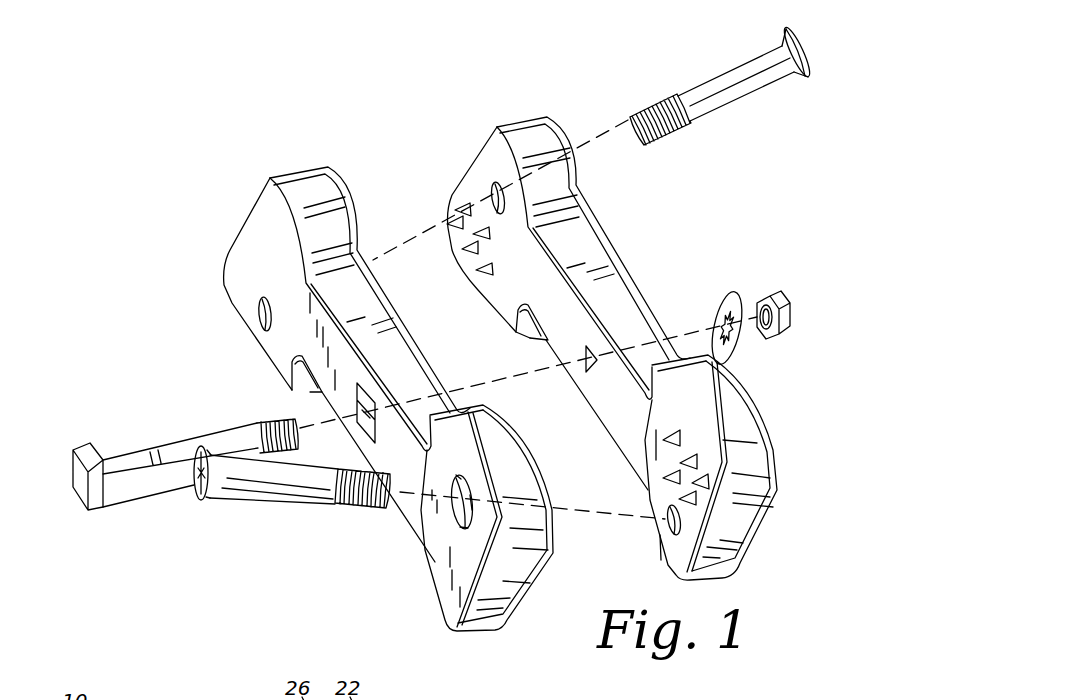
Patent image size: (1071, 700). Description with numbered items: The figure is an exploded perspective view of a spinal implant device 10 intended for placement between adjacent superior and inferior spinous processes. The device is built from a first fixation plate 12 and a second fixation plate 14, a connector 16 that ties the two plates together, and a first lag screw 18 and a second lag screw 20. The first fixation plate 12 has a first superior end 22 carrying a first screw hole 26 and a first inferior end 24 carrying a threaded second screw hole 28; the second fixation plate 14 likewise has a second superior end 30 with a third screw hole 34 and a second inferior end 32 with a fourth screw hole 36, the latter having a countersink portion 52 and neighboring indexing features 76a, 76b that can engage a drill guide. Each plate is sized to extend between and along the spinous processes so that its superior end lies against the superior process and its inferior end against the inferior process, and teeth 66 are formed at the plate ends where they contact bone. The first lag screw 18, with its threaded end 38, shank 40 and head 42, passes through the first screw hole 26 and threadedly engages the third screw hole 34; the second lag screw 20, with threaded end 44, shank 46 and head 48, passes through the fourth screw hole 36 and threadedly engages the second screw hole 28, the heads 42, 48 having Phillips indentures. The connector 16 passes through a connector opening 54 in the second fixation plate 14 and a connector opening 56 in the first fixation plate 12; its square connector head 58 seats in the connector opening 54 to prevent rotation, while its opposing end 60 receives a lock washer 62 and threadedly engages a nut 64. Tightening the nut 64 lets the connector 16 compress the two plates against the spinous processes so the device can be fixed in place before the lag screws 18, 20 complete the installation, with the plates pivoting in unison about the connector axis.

The spinal implant device 10 is at (212, 149).
The first fixation plate 12 is at (592, 251).
The second fixation plate 14 is at (403, 353).
The connector 16 is at (174, 469).
The first lag screw 18 is at (721, 73).
The second lag screw 20 is at (271, 498).
The first superior end 22 is at (488, 130).
The first inferior end 24 is at (740, 533).
The first screw hole 26 is at (492, 193).
The second screw hole 28 is at (670, 532).
The second superior end 30 is at (245, 268).
The second inferior end 32 is at (447, 595).
The third screw hole 34 is at (262, 320).
The fourth screw hole 36 is at (470, 520).
The threaded end 38 is at (657, 108).
The shank 40 is at (748, 57).
The head 42 is at (812, 42).
The threaded end 44 is at (347, 503).
The shank 46 is at (235, 497).
The head 48 is at (198, 487).
The countersink portion 52 is at (453, 515).
The connector opening 54 is at (350, 406).
The connector opening 56 is at (590, 367).
The connector head 58 is at (85, 495).
The opposing end 60 is at (258, 428).
The lock washer 62 is at (723, 300).
The nut 64 is at (770, 297).
The teeth 66 is at (462, 208).
The indexing feature 76a is at (458, 475).
The indexing feature 76b is at (465, 528).